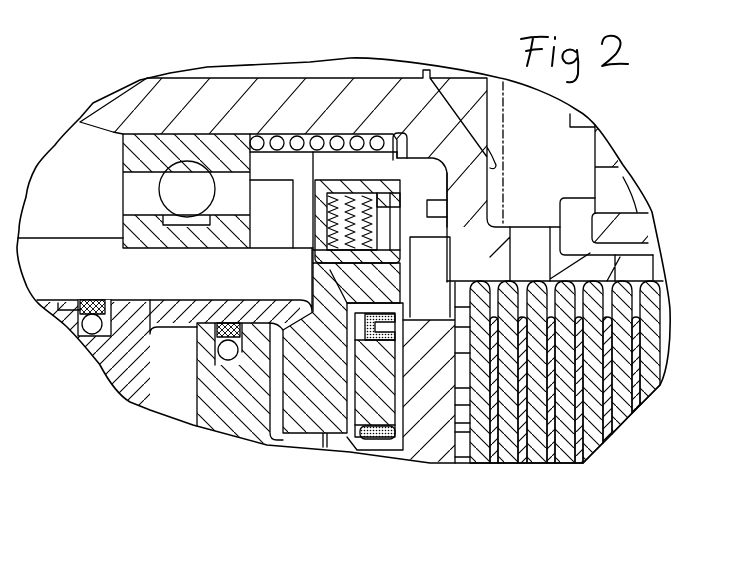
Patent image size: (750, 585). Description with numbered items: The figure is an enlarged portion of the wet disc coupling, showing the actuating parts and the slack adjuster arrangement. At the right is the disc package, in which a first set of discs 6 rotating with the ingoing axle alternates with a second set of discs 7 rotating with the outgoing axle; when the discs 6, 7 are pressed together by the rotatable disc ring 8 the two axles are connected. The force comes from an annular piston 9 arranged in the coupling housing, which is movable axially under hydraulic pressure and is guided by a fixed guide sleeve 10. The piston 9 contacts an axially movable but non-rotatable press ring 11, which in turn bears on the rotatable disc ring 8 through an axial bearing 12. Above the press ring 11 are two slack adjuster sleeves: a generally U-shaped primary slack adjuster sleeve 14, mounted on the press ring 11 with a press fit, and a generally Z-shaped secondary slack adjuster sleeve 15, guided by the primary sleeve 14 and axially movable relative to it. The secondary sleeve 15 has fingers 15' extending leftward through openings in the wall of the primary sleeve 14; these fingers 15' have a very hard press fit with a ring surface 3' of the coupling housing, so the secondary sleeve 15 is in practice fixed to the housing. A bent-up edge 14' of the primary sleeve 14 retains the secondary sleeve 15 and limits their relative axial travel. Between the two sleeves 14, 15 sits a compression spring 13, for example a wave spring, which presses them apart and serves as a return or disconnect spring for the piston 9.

The ring surface 3' is at (320, 140).
The fingers 15' is at (323, 140).
The compression spring 13 is at (347, 193).
The primary slack adjuster sleeve 14 is at (364, 127).
The secondary slack adjuster sleeve 15 is at (414, 111).
The edge 14' is at (407, 130).
The annular piston 9 is at (117, 363).
The guide sleeve 10 is at (227, 413).
The press ring 11 is at (317, 402).
The axial bearing 12 is at (380, 392).
The disc ring 8 is at (427, 437).
The first set of discs 6 is at (593, 442).
The second set of discs 7 is at (607, 442).